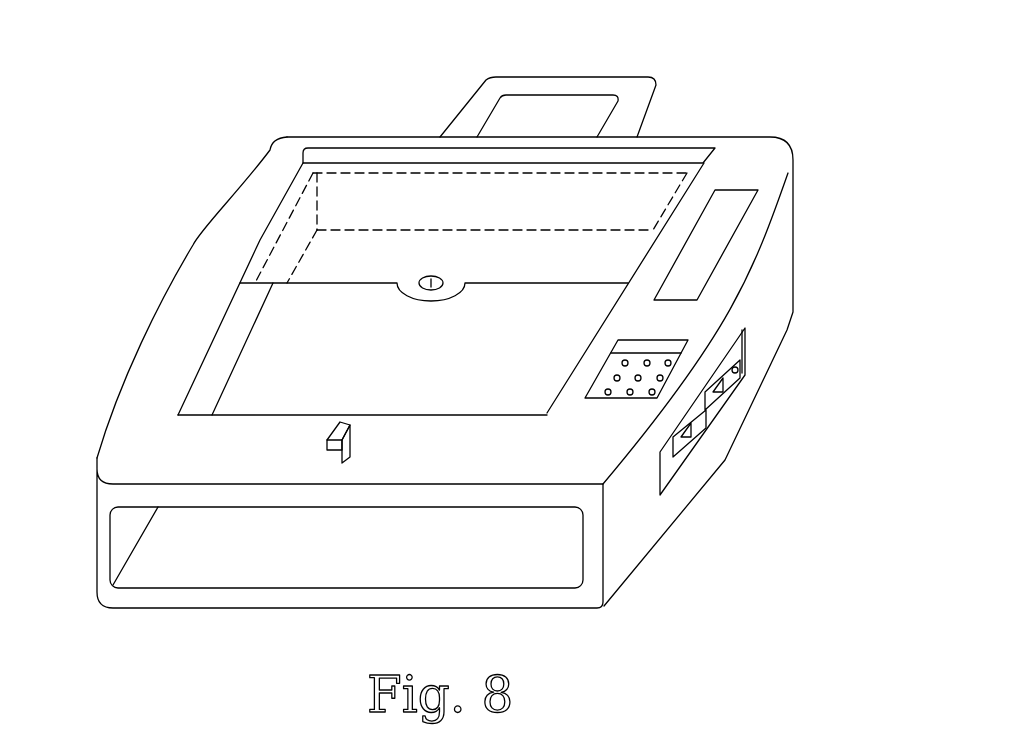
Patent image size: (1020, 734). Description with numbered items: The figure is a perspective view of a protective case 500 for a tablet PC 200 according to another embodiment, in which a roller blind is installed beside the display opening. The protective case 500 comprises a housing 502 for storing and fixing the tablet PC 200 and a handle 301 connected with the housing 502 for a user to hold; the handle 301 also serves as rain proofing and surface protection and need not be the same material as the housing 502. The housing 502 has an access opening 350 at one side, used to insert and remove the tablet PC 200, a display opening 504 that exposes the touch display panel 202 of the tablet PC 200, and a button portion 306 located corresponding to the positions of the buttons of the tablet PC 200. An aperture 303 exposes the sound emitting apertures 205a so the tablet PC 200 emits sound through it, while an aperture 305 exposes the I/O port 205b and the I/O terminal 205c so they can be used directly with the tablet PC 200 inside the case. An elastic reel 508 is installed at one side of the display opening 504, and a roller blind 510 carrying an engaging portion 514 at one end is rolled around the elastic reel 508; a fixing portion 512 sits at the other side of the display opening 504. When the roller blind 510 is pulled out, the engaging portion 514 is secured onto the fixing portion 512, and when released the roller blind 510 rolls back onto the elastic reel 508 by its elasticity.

The tablet PC 200 is at (298, 390).
The touch display panel 202 is at (283, 352).
The sound emitting apertures 205a is at (628, 392).
The input/output (I/O) port 205b is at (713, 400).
The input/output (I/O) terminal 205c is at (743, 355).
The handle 301 is at (547, 87).
The aperture 303 is at (600, 398).
The aperture 305 is at (677, 475).
The button portion 306 is at (747, 223).
The access opening 350 is at (187, 547).
The protective case 500 is at (758, 97).
The housing 502 is at (240, 222).
The display opening 504 is at (287, 415).
The elastic reel 508 is at (707, 150).
The roller blind 510 is at (333, 198).
The fixing portion 512 is at (333, 452).
The engaging portion 514 is at (431, 290).